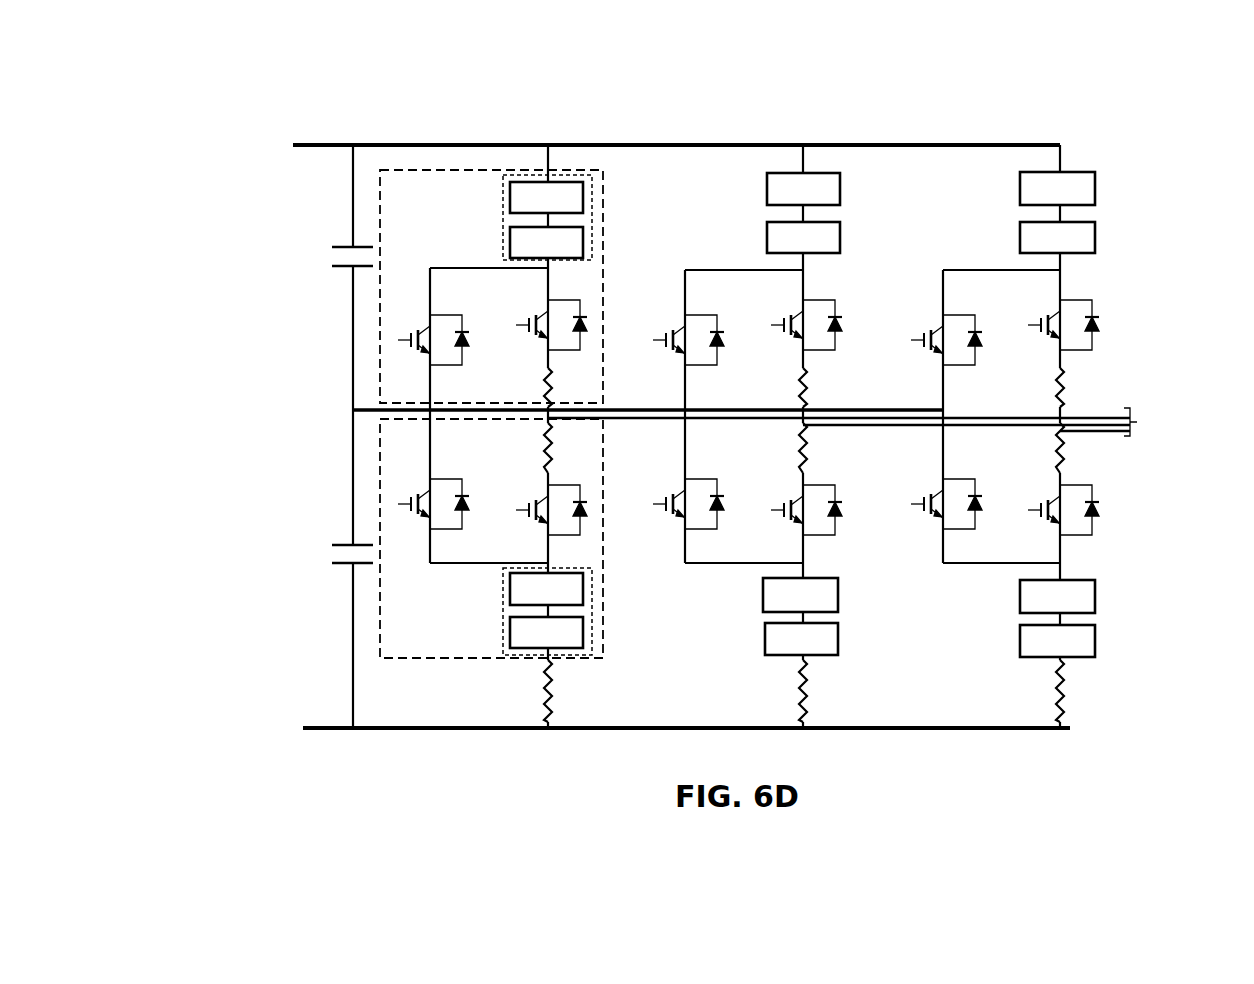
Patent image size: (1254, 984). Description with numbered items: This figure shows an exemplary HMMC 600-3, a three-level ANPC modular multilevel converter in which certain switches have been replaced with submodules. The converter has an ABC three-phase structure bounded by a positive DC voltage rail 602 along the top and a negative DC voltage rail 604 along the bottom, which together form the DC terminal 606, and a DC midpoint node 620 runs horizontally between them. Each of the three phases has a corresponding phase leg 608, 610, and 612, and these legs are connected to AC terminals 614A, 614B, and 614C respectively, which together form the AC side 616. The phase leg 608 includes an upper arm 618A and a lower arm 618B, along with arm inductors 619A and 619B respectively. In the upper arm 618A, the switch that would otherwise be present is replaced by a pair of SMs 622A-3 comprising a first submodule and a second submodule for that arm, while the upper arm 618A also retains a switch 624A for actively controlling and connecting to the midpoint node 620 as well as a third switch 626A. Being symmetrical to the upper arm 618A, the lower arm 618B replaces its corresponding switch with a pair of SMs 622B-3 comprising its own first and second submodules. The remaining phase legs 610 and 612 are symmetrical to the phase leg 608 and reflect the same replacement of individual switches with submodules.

The HMMC 600-3 is at (716, 36).
The positive DC voltage rail 602 is at (293, 140).
The negative DC voltage rail 604 is at (332, 738).
The DC terminal 606 is at (543, 421).
The phase leg 608 is at (548, 733).
The phase leg 610 is at (803, 733).
The phase leg 612 is at (1060, 733).
The AC terminal 614A is at (540, 419).
The AC terminal 614B is at (800, 426).
The AC terminal 614C is at (1055, 432).
The AC side 616 is at (1175, 422).
The upper arm 618A is at (475, 165).
The lower arm 618B is at (500, 660).
The arm inductor 619A is at (560, 392).
The arm inductor 619B is at (560, 460).
The DC midpoint node 620 is at (340, 410).
The pair of SMs 622A-3 is at (596, 188).
The pair of SMs 622B-3 is at (594, 590).
The switch 624A is at (378, 340).
The third switch 626A is at (575, 297).